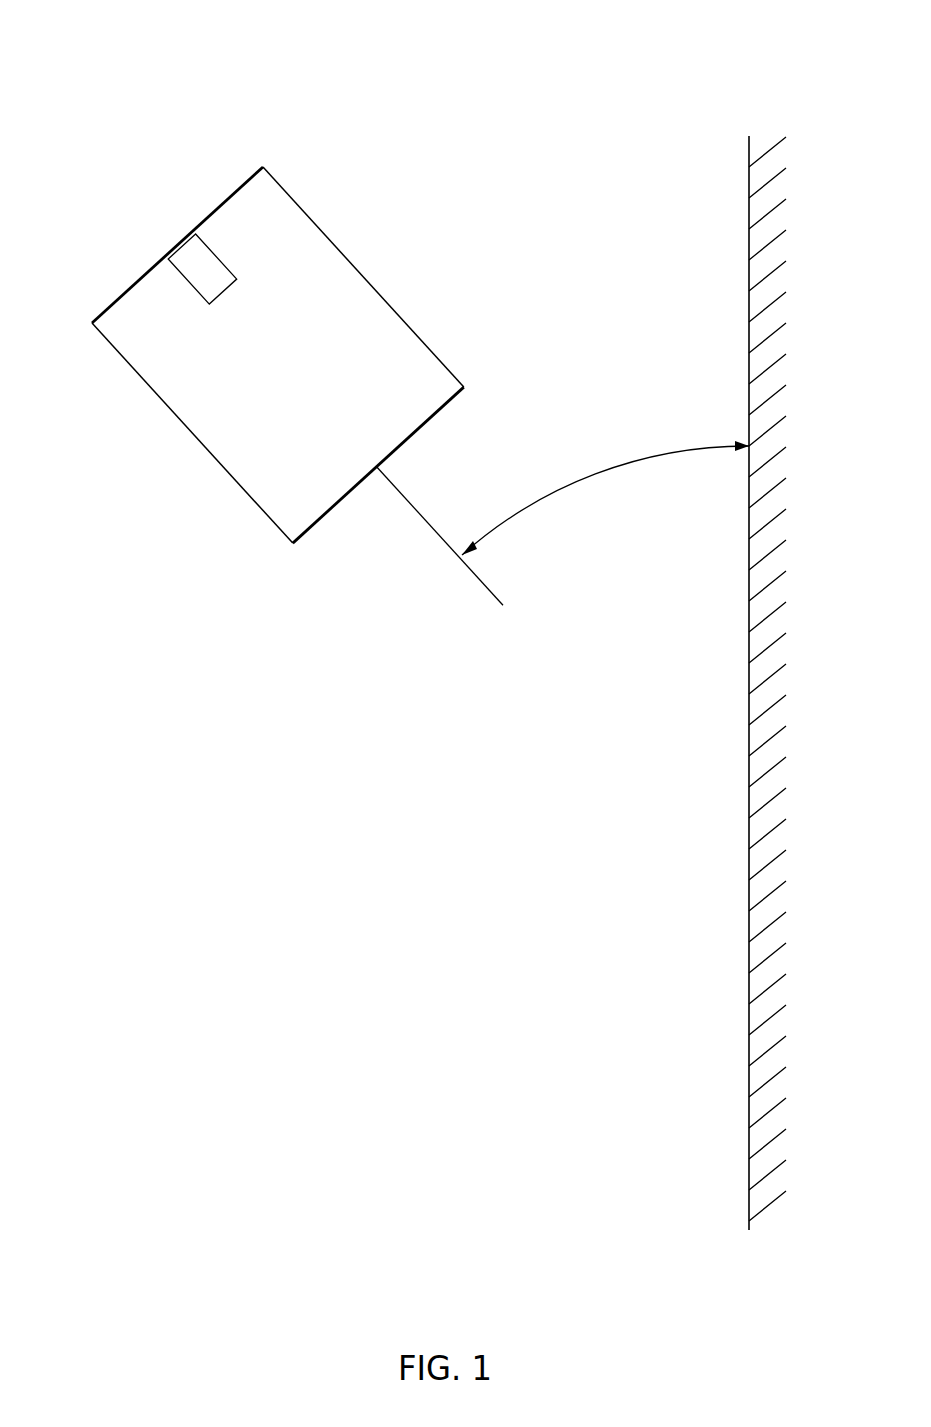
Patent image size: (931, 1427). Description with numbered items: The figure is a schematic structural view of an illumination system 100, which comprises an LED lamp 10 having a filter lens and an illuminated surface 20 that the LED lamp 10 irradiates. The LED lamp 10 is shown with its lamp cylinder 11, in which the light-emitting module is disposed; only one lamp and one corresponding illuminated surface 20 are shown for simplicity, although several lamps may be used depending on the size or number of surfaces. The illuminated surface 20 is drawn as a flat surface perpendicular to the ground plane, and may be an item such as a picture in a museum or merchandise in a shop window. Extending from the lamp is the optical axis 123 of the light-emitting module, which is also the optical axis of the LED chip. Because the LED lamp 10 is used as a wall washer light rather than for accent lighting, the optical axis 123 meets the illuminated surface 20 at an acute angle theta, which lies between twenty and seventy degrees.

The illumination system 100 is at (398, 36).
The LED lamp 10 is at (235, 181).
The lamp cylinder 11 is at (262, 452).
The optical axis 123 is at (440, 535).
The illuminated surface 20 is at (751, 303).
The acute angle theta is at (605, 495).